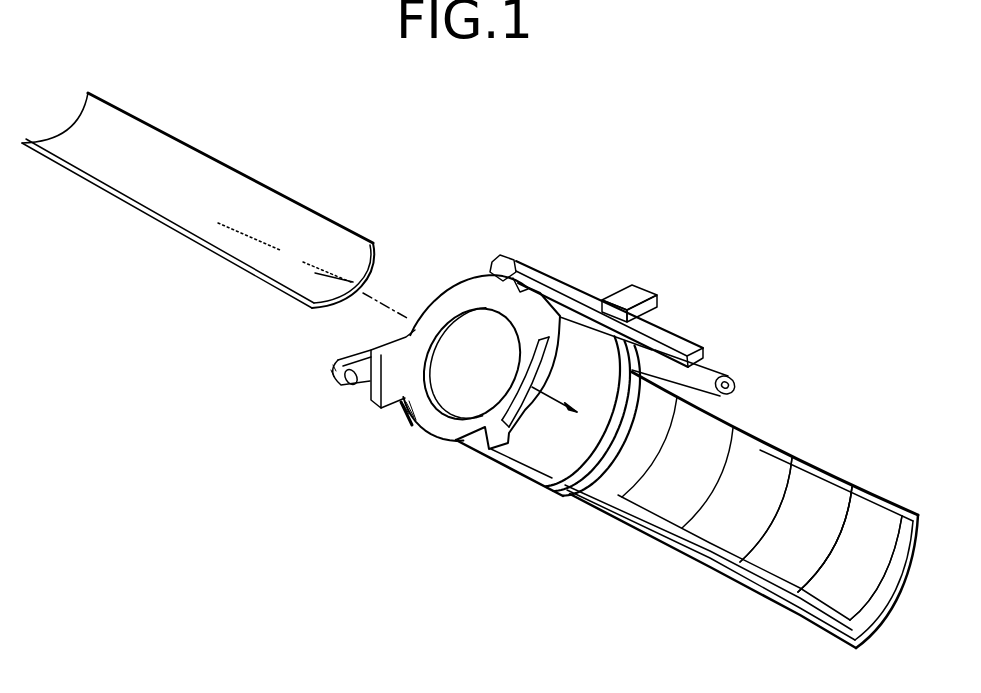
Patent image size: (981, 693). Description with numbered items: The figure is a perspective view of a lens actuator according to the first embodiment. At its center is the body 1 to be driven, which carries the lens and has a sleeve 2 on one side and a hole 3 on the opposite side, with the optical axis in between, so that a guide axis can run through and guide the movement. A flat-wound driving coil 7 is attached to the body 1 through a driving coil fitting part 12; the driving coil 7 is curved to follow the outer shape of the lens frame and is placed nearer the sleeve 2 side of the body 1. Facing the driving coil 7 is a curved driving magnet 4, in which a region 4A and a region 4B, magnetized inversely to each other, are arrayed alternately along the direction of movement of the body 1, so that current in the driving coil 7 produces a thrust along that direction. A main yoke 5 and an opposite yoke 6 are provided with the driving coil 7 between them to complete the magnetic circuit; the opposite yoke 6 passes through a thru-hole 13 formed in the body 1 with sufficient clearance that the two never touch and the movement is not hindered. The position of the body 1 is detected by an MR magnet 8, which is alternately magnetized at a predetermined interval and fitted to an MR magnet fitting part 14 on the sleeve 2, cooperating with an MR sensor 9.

The body to be driven 1 is at (430, 431).
The sleeve 2 is at (723, 366).
The hole 3 is at (345, 402).
The driving magnet 4 is at (777, 472).
The region 4A is at (828, 485).
The region 4B is at (885, 512).
The main yoke 5 is at (746, 591).
The opposite yoke 6 is at (283, 213).
The driving coil 7 is at (562, 496).
The MR magnet 8 is at (572, 283).
The MR sensor 9 is at (640, 292).
The driving coil fitting part 12 is at (528, 463).
The thru-hole 13 is at (505, 462).
The MR magnet fitting part 14 is at (709, 353).